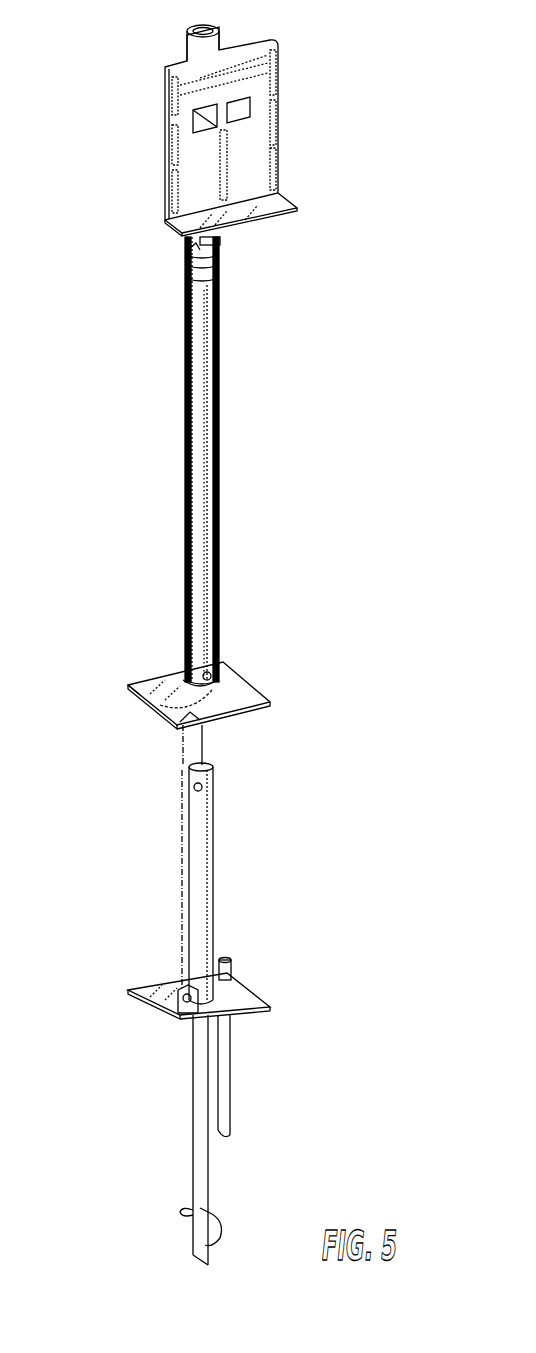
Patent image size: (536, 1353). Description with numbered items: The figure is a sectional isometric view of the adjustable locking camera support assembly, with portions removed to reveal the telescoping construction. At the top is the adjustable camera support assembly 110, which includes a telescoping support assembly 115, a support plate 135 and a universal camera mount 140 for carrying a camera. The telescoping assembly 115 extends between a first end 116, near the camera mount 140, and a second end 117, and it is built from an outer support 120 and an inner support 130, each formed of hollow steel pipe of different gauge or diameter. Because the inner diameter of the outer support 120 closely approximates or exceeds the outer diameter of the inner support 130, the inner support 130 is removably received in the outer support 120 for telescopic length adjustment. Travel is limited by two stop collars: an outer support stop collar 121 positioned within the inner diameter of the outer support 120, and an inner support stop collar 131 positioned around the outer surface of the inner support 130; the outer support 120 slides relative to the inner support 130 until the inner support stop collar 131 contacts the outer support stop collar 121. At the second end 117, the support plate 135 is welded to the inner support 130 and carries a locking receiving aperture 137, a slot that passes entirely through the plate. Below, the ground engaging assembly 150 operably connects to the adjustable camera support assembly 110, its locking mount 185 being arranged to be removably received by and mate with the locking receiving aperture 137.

The adjustable camera support assembly 110 is at (105, 335).
The telescoping support assembly 115 is at (248, 393).
The first end 116 is at (195, 28).
The second end 117 is at (150, 690).
The outer support 120 is at (184, 452).
The outer support stop collar 121 is at (180, 668).
The inner support 130 is at (202, 530).
The inner support stop collar 131 is at (207, 272).
The support plate 135 is at (250, 672).
The locking receiving aperture 137 is at (177, 723).
The universal camera mount 140 is at (237, 57).
The ground engaging assembly 150 is at (318, 918).
The locking mount 185 is at (160, 1012).